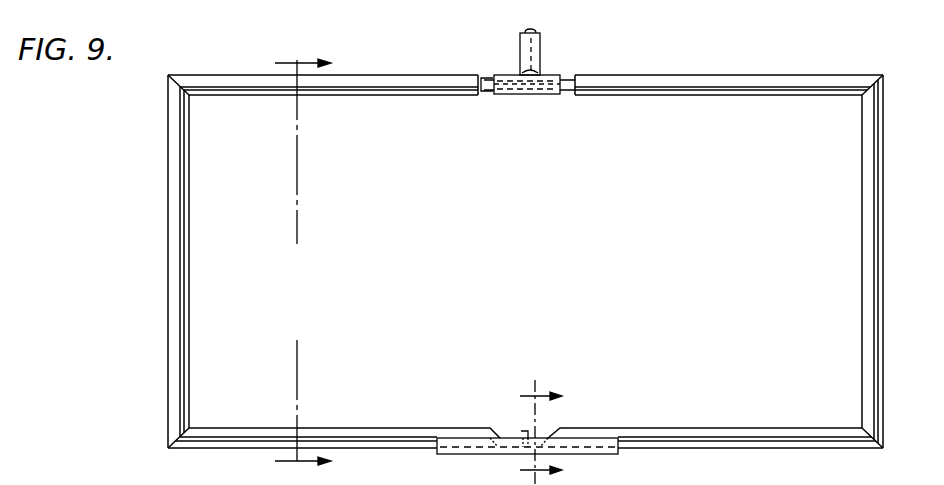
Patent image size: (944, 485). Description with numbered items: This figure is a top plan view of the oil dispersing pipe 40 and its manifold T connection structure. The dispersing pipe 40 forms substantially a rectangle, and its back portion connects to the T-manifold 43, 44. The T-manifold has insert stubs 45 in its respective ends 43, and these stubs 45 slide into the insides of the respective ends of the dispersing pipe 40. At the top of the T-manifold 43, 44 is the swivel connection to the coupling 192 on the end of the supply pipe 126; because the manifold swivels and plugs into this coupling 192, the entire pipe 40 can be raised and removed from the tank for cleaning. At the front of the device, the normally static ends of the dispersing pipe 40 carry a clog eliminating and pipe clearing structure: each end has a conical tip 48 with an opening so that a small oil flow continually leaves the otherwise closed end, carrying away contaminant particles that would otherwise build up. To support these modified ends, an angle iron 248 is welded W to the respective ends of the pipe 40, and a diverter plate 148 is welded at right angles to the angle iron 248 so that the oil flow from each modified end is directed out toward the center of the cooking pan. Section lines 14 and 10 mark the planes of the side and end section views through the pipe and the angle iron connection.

The oil dispersing pipe 40 is at (343, 83).
The T-manifold end 43 is at (543, 95).
The T-manifold 44 is at (506, 95).
The insert stub 45 is at (486, 95).
The coupling 192 is at (541, 45).
The supply pipe 126 is at (522, 33).
The angle iron 248 is at (498, 455).
The diverter plate 148 is at (519, 433).
The conical tip 48 is at (492, 437).
The weld W is at (435, 454).
The section line 14- 14 is at (315, 258).
The section line 10- 10 is at (555, 428).